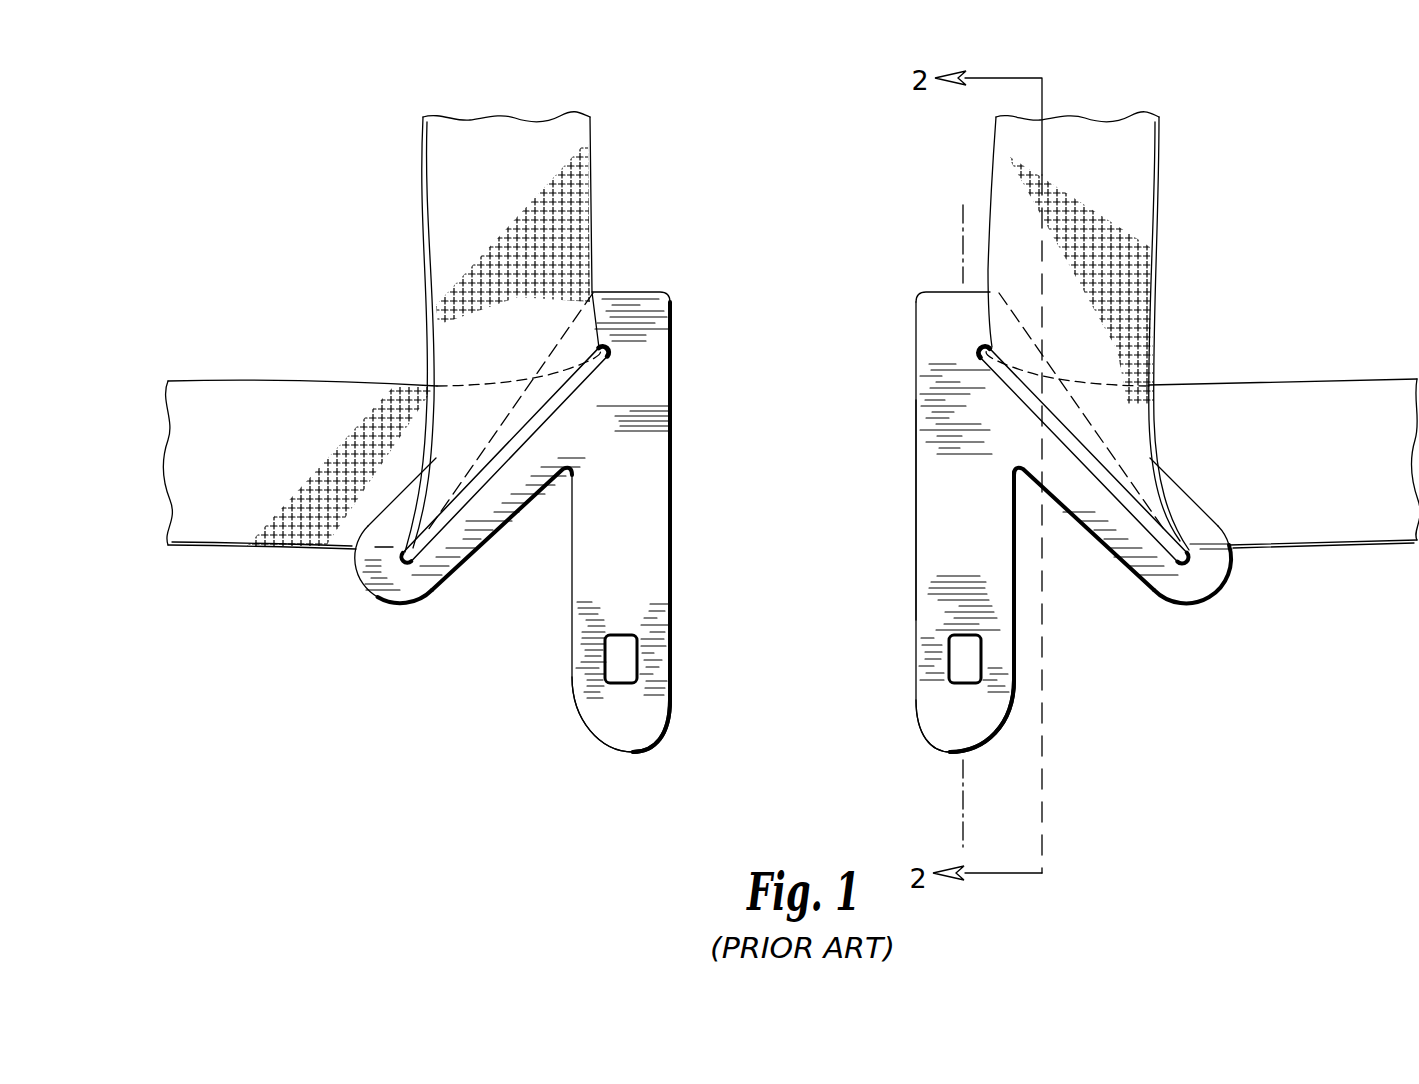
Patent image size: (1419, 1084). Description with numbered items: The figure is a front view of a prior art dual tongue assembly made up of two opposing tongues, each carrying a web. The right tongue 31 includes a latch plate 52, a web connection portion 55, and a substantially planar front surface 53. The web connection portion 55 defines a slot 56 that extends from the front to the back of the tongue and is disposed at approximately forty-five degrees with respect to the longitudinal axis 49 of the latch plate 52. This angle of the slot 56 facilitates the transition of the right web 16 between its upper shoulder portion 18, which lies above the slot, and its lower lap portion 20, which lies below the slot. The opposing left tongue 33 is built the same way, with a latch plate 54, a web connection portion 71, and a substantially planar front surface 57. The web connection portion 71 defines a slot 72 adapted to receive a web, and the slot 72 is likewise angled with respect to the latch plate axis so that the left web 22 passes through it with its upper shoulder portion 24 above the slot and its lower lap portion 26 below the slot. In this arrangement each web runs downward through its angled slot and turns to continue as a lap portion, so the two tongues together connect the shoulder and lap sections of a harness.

The right web 16 is at (1077, 343).
The shoulder portion 18 is at (1133, 152).
The lap portion 20 is at (1306, 406).
The left web 22 is at (452, 224).
The shoulder portion 24 is at (568, 206).
The lap portion 26 is at (255, 516).
The right tongue 31 is at (937, 540).
The left tongue 33 is at (634, 558).
The longitudinal axis 49 is at (962, 265).
The latch plate 52 is at (937, 718).
The front surface 53 is at (936, 430).
The latch plate 54 is at (648, 728).
The web connection portion 55 is at (1090, 498).
The slot 56 is at (1190, 588).
The front surface 57 is at (636, 504).
The web connection portion 71 is at (490, 508).
The slot 72 is at (394, 562).